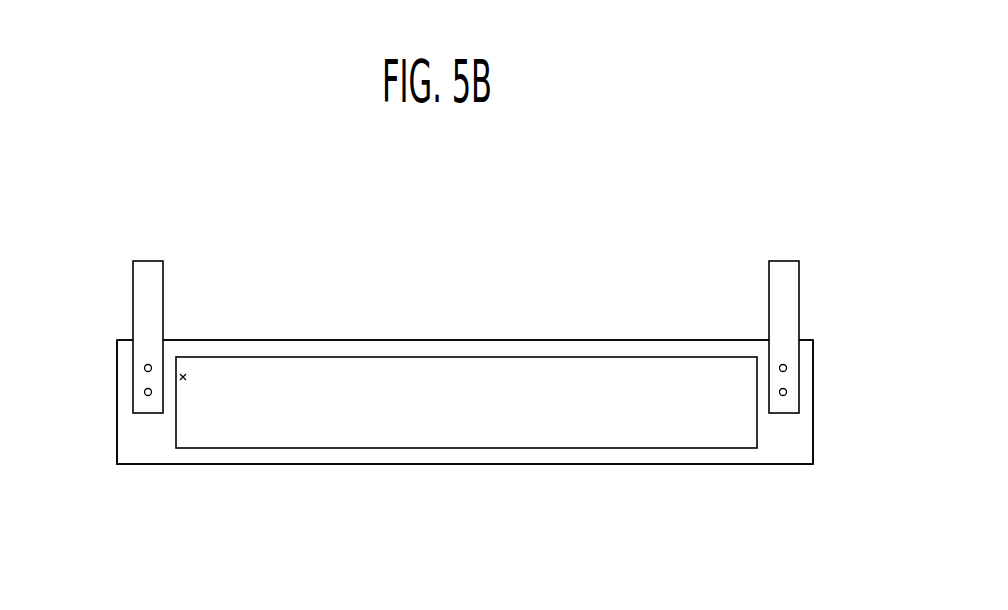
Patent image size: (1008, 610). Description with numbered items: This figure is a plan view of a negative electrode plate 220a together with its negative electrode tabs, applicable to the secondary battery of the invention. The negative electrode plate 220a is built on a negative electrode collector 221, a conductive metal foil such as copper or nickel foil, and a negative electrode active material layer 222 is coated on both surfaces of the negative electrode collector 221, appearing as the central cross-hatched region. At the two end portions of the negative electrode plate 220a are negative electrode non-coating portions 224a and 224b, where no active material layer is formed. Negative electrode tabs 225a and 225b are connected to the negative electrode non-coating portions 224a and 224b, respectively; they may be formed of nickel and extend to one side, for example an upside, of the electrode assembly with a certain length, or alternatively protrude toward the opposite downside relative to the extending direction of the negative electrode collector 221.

The negative electrode plate 220a is at (103, 265).
The negative electrode collector 221 is at (373, 340).
The negative electrode active material layer 222 is at (408, 442).
The negative electrode non-coating portion 224a is at (148, 453).
The negative electrode non-coating portion 224b is at (785, 453).
The negative electrode tab 225a is at (163, 303).
The negative electrode tab 225b is at (799, 303).